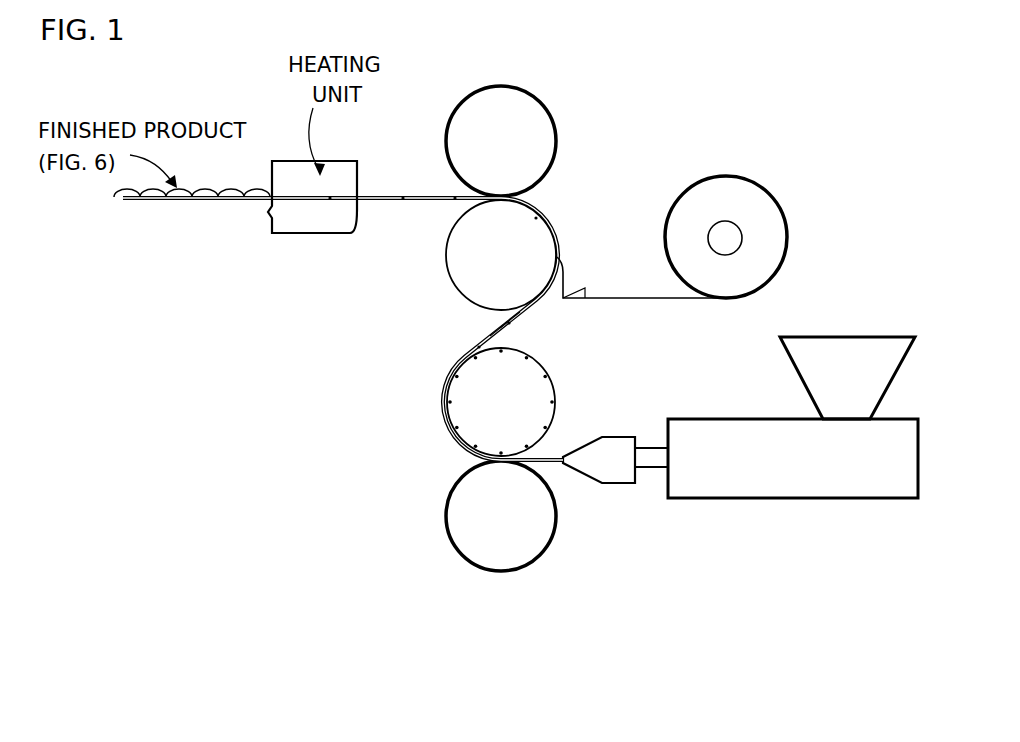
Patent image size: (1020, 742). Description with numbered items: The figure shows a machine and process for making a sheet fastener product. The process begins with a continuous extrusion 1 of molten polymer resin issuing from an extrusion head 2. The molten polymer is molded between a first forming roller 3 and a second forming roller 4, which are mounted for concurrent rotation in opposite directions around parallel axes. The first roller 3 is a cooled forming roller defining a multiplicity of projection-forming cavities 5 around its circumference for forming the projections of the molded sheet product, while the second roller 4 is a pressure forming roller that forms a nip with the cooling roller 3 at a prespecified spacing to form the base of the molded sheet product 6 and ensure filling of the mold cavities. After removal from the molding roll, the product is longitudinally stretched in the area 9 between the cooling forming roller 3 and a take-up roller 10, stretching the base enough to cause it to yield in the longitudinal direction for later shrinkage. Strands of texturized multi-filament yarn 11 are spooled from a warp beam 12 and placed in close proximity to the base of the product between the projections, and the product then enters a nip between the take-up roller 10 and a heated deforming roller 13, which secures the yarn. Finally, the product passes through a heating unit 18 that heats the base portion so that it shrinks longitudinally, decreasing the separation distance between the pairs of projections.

The continuous extrusion 1 is at (547, 457).
The extrusion head 2 is at (605, 472).
The first forming roller 3 is at (508, 416).
The second forming roller 4 is at (508, 526).
The projection-forming cavities 5 is at (554, 382).
The molded sheet product 6 is at (492, 334).
The stretching area 9 is at (514, 327).
The take-up roller 10 is at (514, 262).
The multi-filament yarn 11 is at (565, 279).
The warp beam 12 is at (768, 223).
The heated deforming roller 13 is at (514, 142).
The heating unit 18 is at (303, 220).